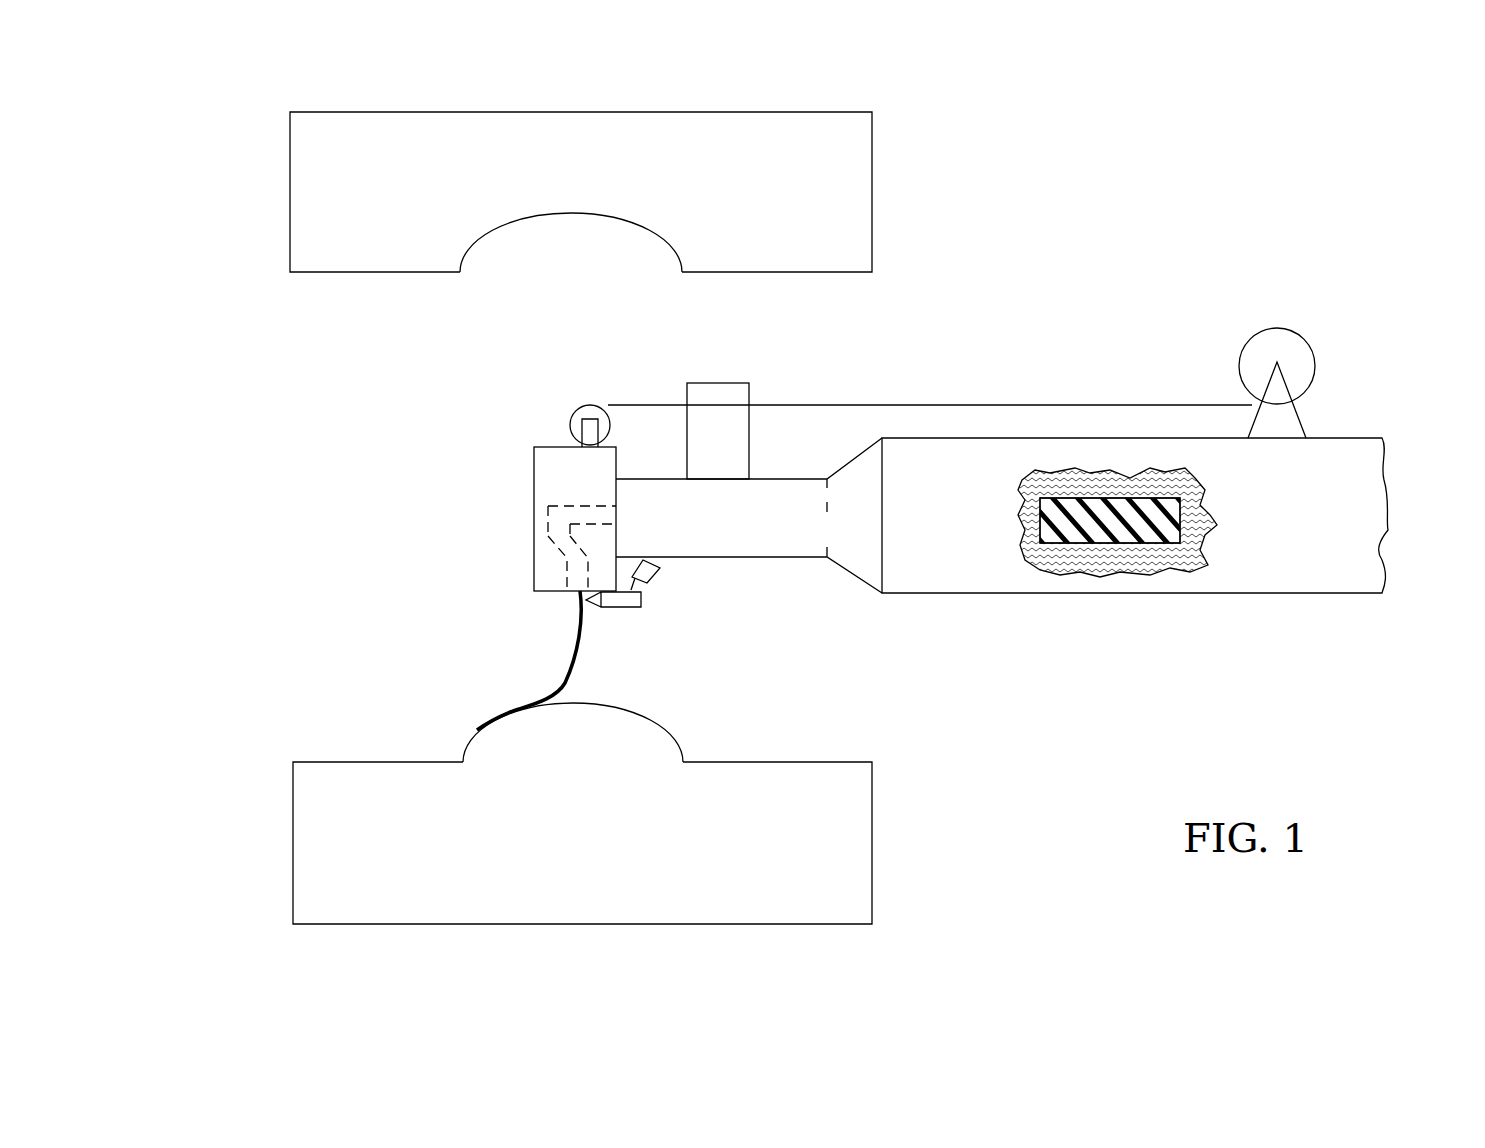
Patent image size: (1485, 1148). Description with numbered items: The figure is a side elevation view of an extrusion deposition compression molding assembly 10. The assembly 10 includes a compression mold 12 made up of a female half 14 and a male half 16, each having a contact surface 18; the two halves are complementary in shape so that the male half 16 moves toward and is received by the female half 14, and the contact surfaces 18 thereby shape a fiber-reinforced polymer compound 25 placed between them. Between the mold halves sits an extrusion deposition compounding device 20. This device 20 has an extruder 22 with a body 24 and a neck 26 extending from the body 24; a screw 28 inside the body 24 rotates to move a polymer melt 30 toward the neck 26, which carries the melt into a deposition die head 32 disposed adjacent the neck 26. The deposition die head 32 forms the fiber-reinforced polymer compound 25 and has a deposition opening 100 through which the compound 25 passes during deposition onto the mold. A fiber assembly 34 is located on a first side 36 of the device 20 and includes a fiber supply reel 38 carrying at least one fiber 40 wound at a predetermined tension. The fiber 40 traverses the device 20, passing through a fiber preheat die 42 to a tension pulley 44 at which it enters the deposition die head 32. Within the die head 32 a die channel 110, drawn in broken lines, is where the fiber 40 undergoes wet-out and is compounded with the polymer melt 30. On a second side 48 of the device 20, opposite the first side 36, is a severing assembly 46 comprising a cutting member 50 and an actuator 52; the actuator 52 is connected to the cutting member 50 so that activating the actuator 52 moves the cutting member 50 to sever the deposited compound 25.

The extrusion deposition compression molding assembly 10 is at (1170, 173).
The compression mold 12 is at (559, 511).
The female half 14 is at (848, 112).
The male half 16 is at (851, 924).
The contact surface 18 is at (322, 272).
The extrusion deposition compounding device 20 is at (943, 705).
The extruder 22 is at (1267, 584).
The body 24 is at (1366, 560).
The fiber-reinforced polymer compound 25 is at (498, 712).
The neck 26 is at (800, 548).
The screw 28 is at (1070, 537).
The polymer melt 30 is at (1167, 555).
The deposition die head 32 is at (534, 455).
The fiber assembly 34 is at (1303, 335).
The first side 36 is at (1365, 437).
The fiber supply reel 38 is at (1261, 341).
The fiber 40 is at (898, 405).
The fiber preheat die 42 is at (749, 383).
The tension pulley 44 is at (578, 412).
The severing assembly 46 is at (648, 608).
The second side 48 is at (1358, 593).
The cutting member 50 is at (613, 608).
The actuator 52 is at (655, 574).
The deposition opening 100 is at (568, 592).
The die channel 110 is at (534, 522).